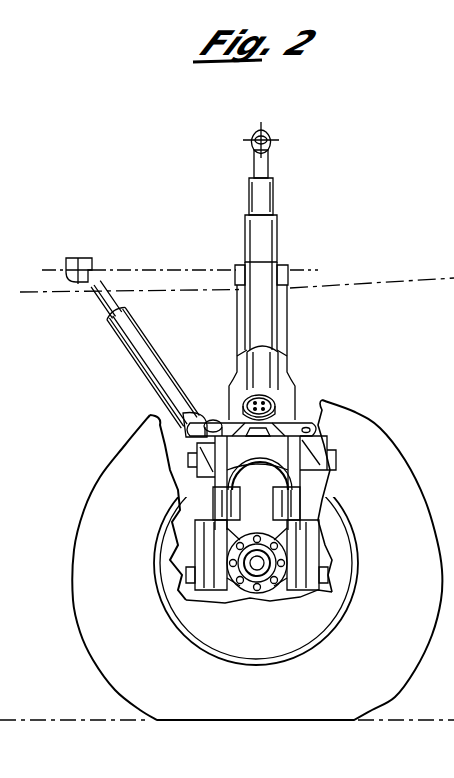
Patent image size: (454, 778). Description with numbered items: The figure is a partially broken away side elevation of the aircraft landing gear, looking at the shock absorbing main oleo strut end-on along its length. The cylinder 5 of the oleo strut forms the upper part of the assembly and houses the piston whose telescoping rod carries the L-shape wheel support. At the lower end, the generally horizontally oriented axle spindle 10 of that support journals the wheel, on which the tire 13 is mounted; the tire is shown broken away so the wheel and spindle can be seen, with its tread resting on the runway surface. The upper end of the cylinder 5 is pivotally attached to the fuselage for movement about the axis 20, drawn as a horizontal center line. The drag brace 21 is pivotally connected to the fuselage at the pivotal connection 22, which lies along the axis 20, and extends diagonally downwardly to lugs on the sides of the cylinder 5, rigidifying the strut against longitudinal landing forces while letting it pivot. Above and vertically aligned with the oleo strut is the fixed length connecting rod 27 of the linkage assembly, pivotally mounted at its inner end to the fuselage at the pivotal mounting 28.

The cylinder 5 is at (289, 353).
The axle spindle 10 is at (268, 590).
The tire 13 is at (100, 480).
The axis 20 is at (155, 270).
The drag brace 21 is at (133, 348).
The pivotal connection 22 is at (74, 262).
The fixed length connecting rod 27 is at (265, 240).
The pivotal mounting 28 is at (266, 136).